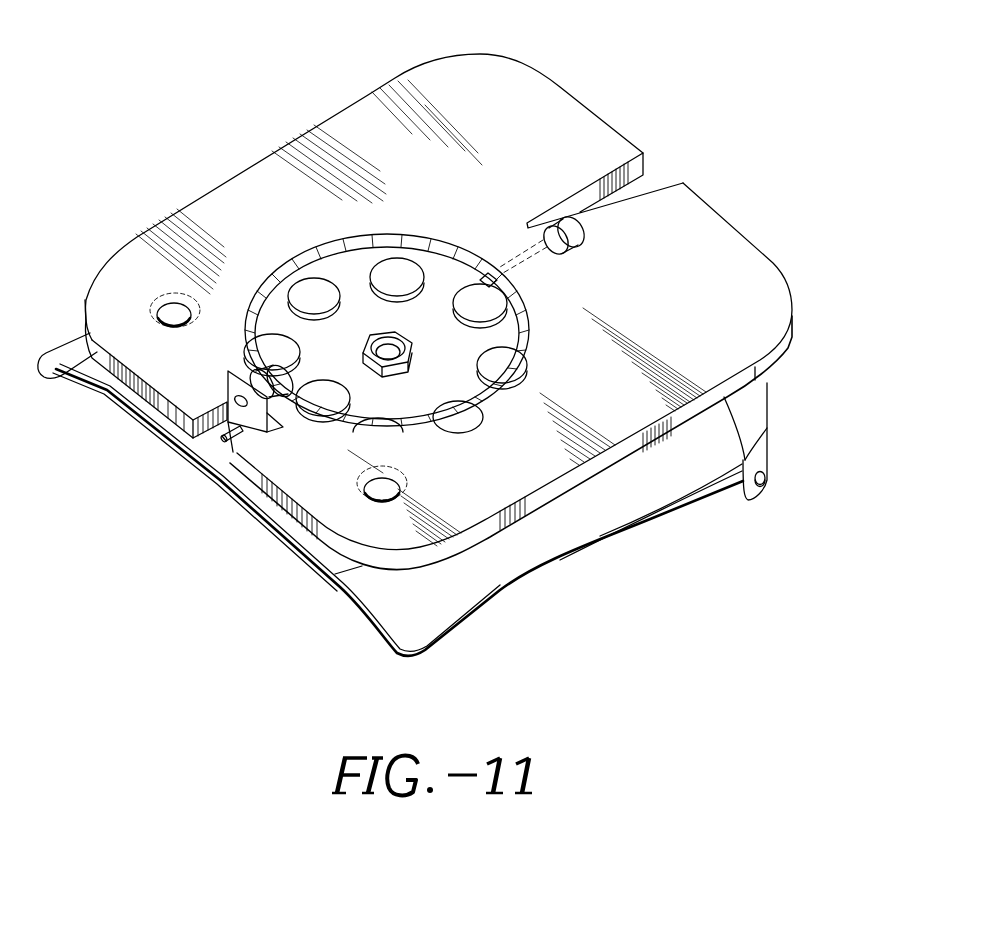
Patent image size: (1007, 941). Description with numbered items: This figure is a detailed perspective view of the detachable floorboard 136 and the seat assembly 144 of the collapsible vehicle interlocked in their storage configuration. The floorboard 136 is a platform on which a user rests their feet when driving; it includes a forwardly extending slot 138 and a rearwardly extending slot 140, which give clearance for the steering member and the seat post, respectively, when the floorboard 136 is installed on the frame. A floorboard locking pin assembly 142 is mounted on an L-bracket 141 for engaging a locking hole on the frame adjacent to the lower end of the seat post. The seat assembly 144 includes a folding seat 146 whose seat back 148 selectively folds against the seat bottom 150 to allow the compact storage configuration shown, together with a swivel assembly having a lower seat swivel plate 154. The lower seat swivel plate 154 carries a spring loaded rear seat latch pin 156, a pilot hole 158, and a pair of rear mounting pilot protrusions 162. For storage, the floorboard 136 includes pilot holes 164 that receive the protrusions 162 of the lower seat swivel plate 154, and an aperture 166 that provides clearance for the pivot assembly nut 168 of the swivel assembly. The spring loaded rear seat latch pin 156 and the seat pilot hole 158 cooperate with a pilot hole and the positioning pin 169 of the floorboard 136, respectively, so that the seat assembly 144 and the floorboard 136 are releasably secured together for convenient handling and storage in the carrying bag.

The floorboard 136 is at (533, 457).
The forwardly extending slot 138 is at (616, 186).
The rearwardly extending slot 140 is at (204, 421).
The L-bracket 141 is at (236, 392).
The floorboard locking pin assembly 142 is at (284, 378).
The seat assembly 144 is at (531, 257).
The folding seat 146 is at (783, 437).
The seat back 148 is at (676, 515).
The seat bottom 150 is at (433, 612).
The lower seat swivel plate 154 is at (388, 319).
The spring loaded rear seat latch pin 156 is at (572, 218).
The pilot hole 158 is at (247, 434).
The rear mounting pilot protrusions 162 is at (178, 320).
The pilot holes 164 is at (166, 312).
The aperture 166 is at (428, 243).
The pivot assembly nut 168 is at (394, 367).
The positioning pin 169 is at (238, 445).